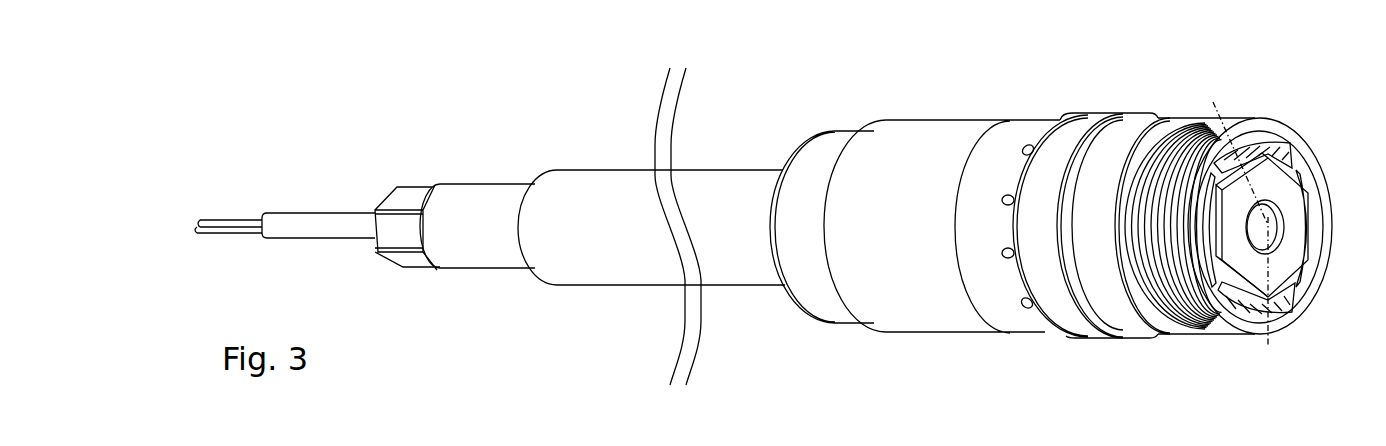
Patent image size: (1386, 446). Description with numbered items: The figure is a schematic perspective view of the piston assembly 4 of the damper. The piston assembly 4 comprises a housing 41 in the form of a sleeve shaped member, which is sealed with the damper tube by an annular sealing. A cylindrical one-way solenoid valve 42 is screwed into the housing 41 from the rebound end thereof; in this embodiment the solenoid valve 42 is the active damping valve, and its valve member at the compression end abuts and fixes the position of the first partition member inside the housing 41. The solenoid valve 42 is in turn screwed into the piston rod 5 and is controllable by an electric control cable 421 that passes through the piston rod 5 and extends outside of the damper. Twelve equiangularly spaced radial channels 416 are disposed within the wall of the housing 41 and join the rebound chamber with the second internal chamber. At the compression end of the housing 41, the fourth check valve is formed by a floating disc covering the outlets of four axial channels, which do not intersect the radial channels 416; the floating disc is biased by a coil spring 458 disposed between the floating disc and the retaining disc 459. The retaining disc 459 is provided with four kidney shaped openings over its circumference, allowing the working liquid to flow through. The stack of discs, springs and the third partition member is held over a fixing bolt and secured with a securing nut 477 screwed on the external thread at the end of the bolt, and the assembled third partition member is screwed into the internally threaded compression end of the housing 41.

The piston assembly 4 is at (1176, 196).
The piston rod 5 is at (602, 207).
The housing 41 is at (923, 158).
The one-way solenoid valve 42 is at (829, 157).
The radial channels 416 is at (1007, 195).
The electric control cable 421 is at (250, 220).
The coil spring 458 is at (1180, 128).
The retaining disc 459 is at (1257, 130).
The securing nut 477 is at (1285, 195).